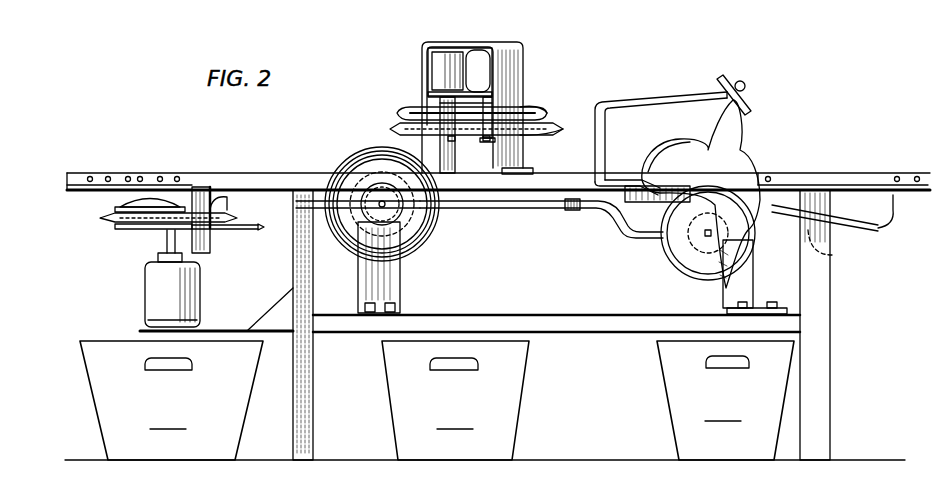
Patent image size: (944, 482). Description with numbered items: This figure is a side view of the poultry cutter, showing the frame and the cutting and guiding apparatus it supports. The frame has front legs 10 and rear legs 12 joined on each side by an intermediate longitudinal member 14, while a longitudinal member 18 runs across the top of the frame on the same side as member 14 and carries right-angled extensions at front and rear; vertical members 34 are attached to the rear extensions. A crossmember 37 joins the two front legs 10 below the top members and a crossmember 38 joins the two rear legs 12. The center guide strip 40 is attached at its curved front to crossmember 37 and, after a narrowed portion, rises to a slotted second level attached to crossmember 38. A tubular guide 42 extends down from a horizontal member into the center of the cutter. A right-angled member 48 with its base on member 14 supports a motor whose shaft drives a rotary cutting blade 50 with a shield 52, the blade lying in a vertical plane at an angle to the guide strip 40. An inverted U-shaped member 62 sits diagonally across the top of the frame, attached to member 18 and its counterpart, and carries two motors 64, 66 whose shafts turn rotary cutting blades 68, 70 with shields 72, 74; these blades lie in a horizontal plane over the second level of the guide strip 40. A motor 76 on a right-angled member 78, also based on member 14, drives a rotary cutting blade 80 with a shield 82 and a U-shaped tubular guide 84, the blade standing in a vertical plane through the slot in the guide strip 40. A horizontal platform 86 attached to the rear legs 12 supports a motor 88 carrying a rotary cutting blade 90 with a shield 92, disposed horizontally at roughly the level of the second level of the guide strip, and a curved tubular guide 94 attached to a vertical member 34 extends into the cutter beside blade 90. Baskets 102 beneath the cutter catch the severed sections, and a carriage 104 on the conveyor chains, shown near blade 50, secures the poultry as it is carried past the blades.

The front legs 10 is at (818, 410).
The rear legs 12 is at (299, 388).
The intermediate longitudinal member 14 is at (596, 323).
The longitudinal member 18 is at (548, 172).
The vertical members 34 is at (204, 196).
The crossmember 37 is at (836, 258).
The crossmember 38 is at (290, 210).
The center guide strip 40 is at (520, 210).
The tubular guide 42 is at (876, 192).
The right-angled member 48 is at (728, 300).
The rotary cutting blade 50 is at (722, 190).
The shield 52 is at (665, 245).
The inverted U-shaped member 62 is at (515, 70).
The motor 64 is at (483, 70).
The motor 66 is at (448, 73).
The rotary cutting blade 68 is at (548, 128).
The rotary cutting blade 70 is at (395, 128).
The shield 72 is at (530, 112).
The shield 74 is at (408, 108).
The motor 76 is at (392, 212).
The right-angled member 78 is at (400, 290).
The rotary cutting blade 80 is at (427, 222).
The shield 82 is at (385, 214).
The U-shaped tubular guide 84 is at (321, 200).
The platform 86 is at (243, 330).
The motor 88 is at (192, 284).
The rotary cutting blade 90 is at (113, 218).
The shield 92 is at (121, 200).
The curved tubular guide 94 is at (264, 229).
The baskets 102 is at (437, 400).
The carriage 104 is at (617, 158).